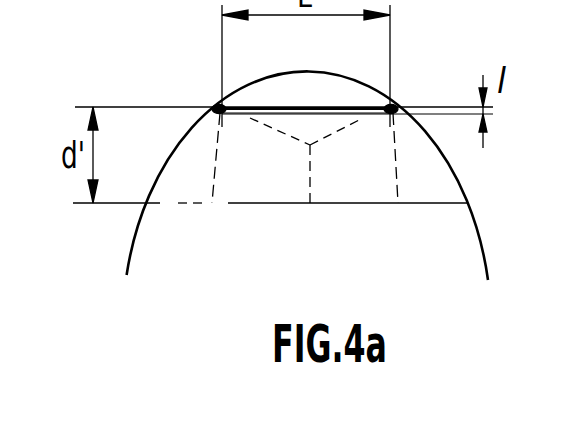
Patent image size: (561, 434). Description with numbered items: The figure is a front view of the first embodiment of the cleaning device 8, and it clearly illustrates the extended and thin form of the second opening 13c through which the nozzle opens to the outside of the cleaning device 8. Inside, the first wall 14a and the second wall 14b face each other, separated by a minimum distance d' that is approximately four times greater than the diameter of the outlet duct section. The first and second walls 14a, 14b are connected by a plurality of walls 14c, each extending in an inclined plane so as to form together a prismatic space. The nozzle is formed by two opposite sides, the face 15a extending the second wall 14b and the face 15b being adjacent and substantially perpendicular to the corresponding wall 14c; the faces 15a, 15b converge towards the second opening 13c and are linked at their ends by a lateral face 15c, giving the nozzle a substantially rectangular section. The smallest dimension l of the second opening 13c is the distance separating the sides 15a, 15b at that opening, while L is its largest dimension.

The cleaning device 8 is at (118, 245).
The second opening 13c is at (281, 108).
The first wall 14a is at (340, 203).
The second wall 14b is at (310, 108).
The walls 14c is at (370, 178).
The face 15a is at (317, 85).
The face 15b is at (337, 117).
The lateral face 15c is at (217, 110).